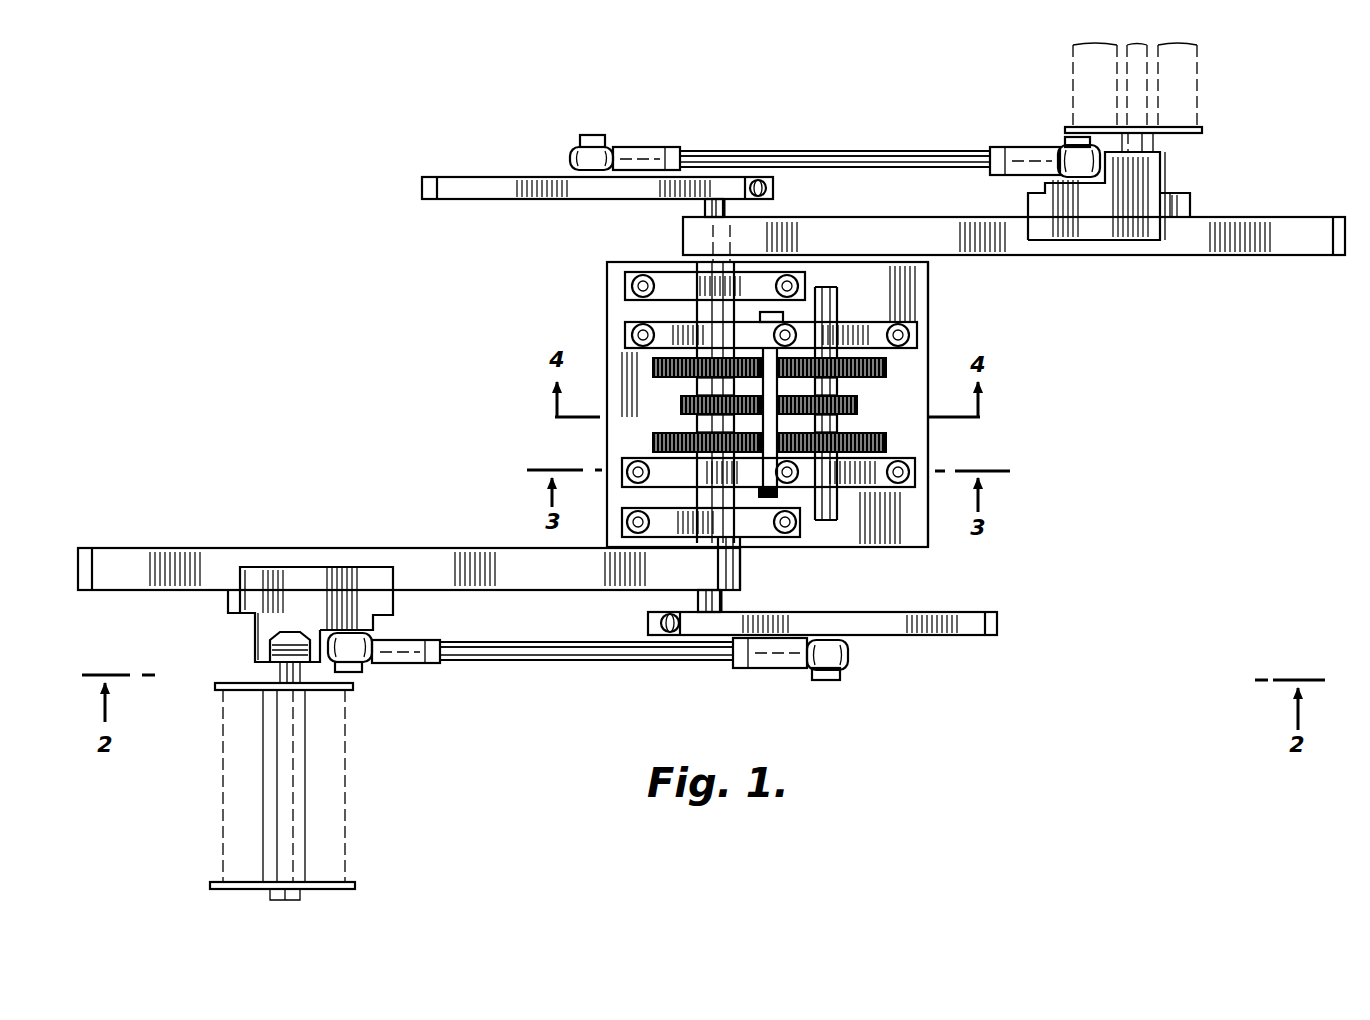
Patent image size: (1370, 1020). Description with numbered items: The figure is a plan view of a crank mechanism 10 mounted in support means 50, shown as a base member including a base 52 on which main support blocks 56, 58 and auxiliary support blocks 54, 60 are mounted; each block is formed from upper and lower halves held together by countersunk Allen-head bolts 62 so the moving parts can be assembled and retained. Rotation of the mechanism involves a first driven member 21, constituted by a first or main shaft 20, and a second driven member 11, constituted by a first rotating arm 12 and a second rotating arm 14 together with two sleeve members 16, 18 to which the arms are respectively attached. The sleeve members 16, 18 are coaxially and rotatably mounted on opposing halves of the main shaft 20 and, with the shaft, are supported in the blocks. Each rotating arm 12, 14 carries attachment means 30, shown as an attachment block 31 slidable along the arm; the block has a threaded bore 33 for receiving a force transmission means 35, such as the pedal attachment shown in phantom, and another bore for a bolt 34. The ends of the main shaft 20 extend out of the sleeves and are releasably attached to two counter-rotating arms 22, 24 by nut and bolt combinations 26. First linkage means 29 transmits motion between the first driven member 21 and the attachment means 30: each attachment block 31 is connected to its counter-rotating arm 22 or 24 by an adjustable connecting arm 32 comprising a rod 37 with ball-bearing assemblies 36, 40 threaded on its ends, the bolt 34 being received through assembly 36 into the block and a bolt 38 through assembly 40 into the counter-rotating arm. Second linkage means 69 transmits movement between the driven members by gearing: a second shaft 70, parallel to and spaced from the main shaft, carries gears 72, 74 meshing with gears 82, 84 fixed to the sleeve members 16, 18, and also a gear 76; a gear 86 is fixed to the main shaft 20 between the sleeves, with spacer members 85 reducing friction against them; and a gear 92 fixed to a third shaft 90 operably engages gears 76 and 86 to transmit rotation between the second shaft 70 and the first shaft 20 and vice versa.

The crank mechanism 10 is at (1113, 455).
The second driven member 11 is at (1020, 265).
The first rotating arm 12 is at (228, 545).
The second rotating arm 14 is at (1295, 262).
The sleeve member 16 is at (735, 565).
The sleeve member 18 is at (697, 310).
The main shaft 20 is at (703, 207).
The first driven member 21 is at (735, 207).
The counter-rotating arm 22 is at (908, 637).
The counter-rotating arm 24 is at (508, 175).
The nut and bolt combination 26 is at (760, 180).
The first linkage means 29 is at (727, 138).
The attachment means 30 is at (1205, 195).
The attachment block 31 is at (1172, 190).
The connecting arm 32 is at (880, 150).
The threaded bore 33 is at (278, 662).
The bolt 34 is at (1065, 138).
The force transmission means 35 is at (1205, 100).
The ball-bearing assembly 36 is at (1032, 147).
The rod 37 is at (950, 150).
The bolt 38 is at (592, 135).
The ball-bearing assembly 40 is at (640, 147).
The support means 50 is at (932, 294).
The base 52 is at (928, 316).
The auxiliary support block 54 is at (800, 540).
The main support block 56 is at (915, 473).
The main support block 58 is at (917, 336).
The auxiliary support block 60 is at (625, 288).
The Allen-head bolt 62 is at (630, 280).
The second linkage means 69 is at (857, 500).
The second shaft 70 is at (852, 522).
The gear 72 is at (887, 443).
The gear 74 is at (887, 366).
The gear 76 is at (858, 405).
The gear 82 is at (652, 443).
The gear 84 is at (652, 366).
The spacer member 85 is at (648, 385).
The gear 86 is at (680, 405).
The third shaft 90 is at (837, 386).
The gear 92 is at (837, 424).